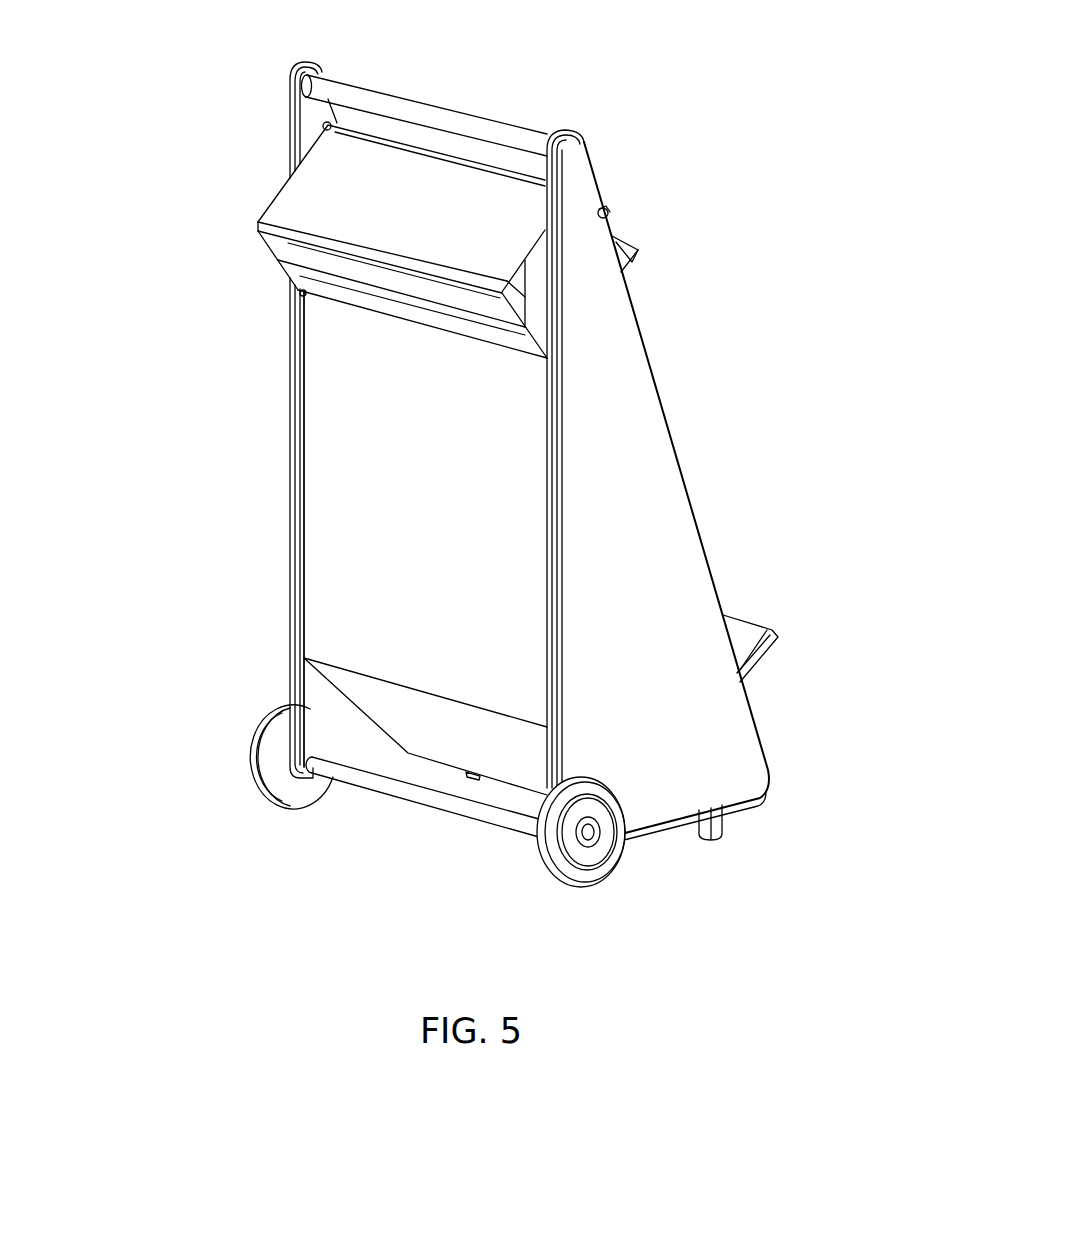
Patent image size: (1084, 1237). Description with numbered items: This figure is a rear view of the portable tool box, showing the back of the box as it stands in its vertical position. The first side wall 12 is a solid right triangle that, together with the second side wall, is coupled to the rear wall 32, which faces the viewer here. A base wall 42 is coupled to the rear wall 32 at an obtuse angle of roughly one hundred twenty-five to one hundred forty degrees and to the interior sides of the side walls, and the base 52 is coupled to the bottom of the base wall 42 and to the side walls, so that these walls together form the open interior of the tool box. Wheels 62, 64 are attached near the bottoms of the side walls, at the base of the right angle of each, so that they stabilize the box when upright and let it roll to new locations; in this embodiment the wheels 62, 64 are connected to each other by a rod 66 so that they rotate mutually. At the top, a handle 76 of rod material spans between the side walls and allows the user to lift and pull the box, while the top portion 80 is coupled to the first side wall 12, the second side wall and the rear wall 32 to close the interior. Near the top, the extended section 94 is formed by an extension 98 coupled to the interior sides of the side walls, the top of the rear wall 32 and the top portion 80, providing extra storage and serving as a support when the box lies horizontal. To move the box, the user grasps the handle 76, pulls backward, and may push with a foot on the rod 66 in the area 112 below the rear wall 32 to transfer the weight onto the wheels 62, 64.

The first side wall 12 is at (626, 627).
The rear wall 32 is at (398, 559).
The base wall 42 is at (442, 751).
The base 52 is at (753, 633).
The wheel 62 is at (585, 863).
The wheel 64 is at (283, 790).
The rod 66 is at (450, 797).
The handle 76 is at (463, 120).
The top portion 80 is at (398, 217).
The extended section 94 is at (255, 223).
The extension 98 is at (378, 278).
The area below the rear wall 112 is at (422, 768).